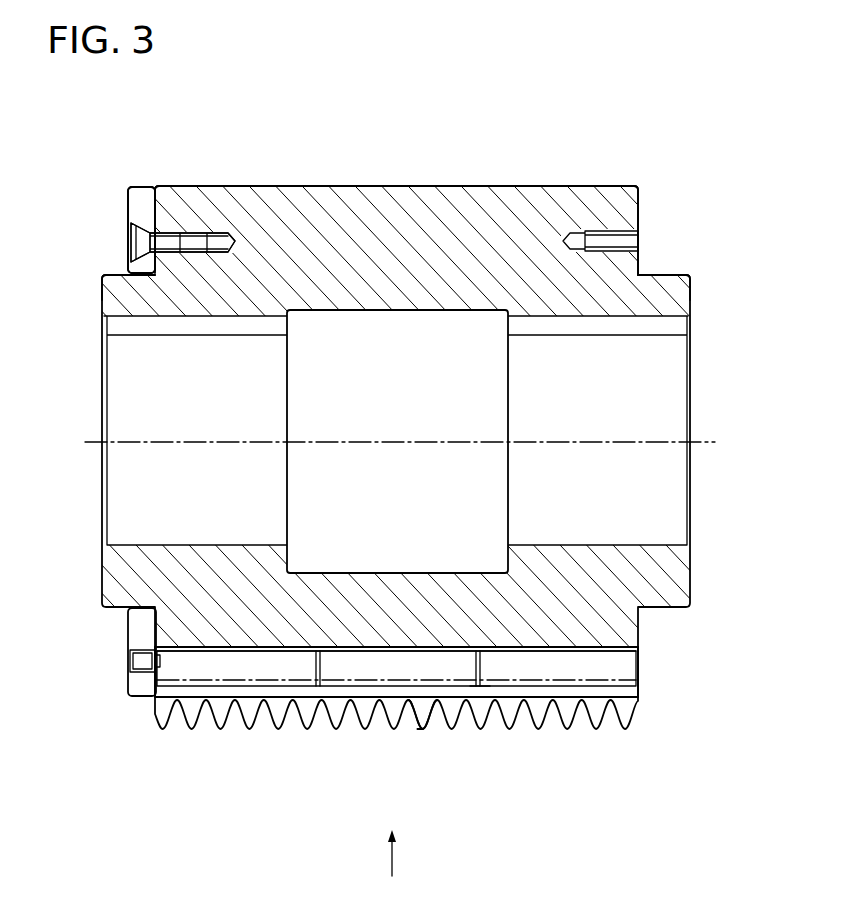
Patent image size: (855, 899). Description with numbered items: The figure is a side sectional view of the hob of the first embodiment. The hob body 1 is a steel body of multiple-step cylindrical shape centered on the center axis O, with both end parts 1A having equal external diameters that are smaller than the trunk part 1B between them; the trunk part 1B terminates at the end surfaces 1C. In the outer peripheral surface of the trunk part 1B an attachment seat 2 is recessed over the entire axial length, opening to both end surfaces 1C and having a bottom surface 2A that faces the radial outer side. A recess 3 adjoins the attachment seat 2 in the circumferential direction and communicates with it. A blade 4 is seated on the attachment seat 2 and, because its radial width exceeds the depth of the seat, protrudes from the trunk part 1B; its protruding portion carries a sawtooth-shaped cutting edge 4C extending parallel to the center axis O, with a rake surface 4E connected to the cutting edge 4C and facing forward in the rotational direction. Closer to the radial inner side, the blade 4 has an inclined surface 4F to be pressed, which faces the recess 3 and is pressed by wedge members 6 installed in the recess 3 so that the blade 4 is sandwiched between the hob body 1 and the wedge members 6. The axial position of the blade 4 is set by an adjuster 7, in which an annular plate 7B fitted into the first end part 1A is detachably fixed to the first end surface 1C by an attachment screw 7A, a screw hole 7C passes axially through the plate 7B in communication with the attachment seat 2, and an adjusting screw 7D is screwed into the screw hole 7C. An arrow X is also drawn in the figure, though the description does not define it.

The hob body 1 is at (440, 161).
The end parts 1A is at (113, 287).
The trunk part 1B is at (470, 198).
The end surfaces 1C is at (152, 207).
The attachment seat 2 is at (643, 668).
The bottom surface 2A is at (578, 654).
The recess 3 is at (288, 647).
The blade 4 is at (313, 738).
The cutting edge 4C is at (424, 730).
The rake surface 4E is at (422, 712).
The surface to be pressed 4F is at (482, 688).
The wedge members 6 is at (252, 668).
The adjuster 7 is at (123, 191).
The attachment screw 7A is at (132, 242).
The plate 7B is at (140, 210).
The screw hole 7C is at (139, 644).
The adjusting screw 7D is at (130, 662).
The center axis O is at (600, 440).
The axial direction X is at (381, 853).